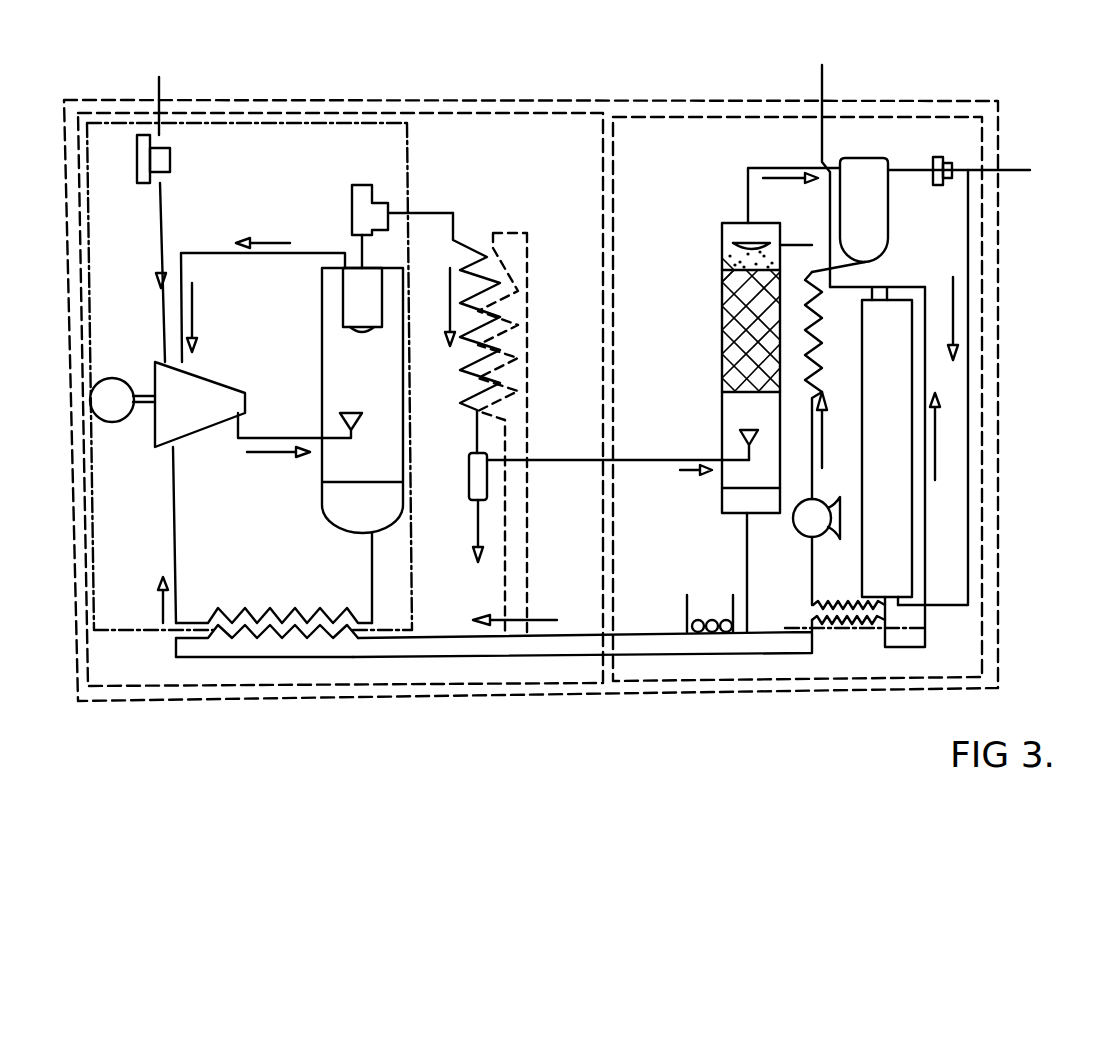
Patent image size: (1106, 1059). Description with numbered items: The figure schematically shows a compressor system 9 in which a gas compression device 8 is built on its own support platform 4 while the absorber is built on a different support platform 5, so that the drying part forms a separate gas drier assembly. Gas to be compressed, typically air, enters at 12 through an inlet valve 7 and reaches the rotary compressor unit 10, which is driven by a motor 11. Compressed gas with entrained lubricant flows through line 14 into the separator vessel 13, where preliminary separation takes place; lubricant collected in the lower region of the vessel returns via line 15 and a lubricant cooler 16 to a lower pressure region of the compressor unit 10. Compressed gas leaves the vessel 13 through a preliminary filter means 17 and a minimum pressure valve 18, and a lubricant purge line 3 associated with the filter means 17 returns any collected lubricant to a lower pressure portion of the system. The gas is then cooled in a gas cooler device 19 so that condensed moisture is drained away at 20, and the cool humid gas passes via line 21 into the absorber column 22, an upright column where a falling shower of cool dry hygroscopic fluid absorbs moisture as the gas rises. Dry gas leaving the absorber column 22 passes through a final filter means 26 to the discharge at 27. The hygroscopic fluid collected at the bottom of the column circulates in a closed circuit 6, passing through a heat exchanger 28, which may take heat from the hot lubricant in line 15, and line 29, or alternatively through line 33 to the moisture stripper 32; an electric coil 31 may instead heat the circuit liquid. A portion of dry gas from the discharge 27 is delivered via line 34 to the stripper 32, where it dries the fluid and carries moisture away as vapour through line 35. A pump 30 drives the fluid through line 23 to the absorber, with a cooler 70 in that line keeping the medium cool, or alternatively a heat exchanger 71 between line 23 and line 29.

The lubricant purge line 3 is at (308, 252).
The support platform 4 is at (567, 688).
The support platform 5 is at (1000, 652).
The closed circuit 6 is at (465, 657).
The inlet valve 7 is at (137, 166).
The gas compression device 8 is at (410, 125).
The compressor system 9 is at (553, 97).
The rotary compressor unit 10 is at (202, 393).
The motor 11 is at (113, 408).
The gas inlet 12 is at (167, 353).
The separator vessel 13 is at (323, 310).
The line 14 is at (277, 438).
The line 15 is at (175, 520).
The lubricant cooler 16 is at (247, 608).
The preliminary filter means 17 is at (367, 285).
The minimum pressure valve 18 is at (363, 202).
The gas cooler device 19 is at (490, 333).
The drain 20 is at (477, 522).
The line 21 is at (693, 460).
The absorber column 22 is at (722, 318).
The line 23 is at (905, 288).
The final filter means 26 is at (873, 225).
The compressed gas discharge 27 is at (920, 160).
The heat exchanger 28 is at (527, 297).
The line 29 is at (342, 657).
The pump 30 is at (812, 520).
The electric coil 31 is at (723, 625).
The moisture stripper 32 is at (915, 470).
The line 33 is at (858, 628).
The line 34 is at (970, 388).
The line 35 is at (822, 132).
The cooler 70 is at (808, 365).
The heat exchanger 71 is at (840, 627).